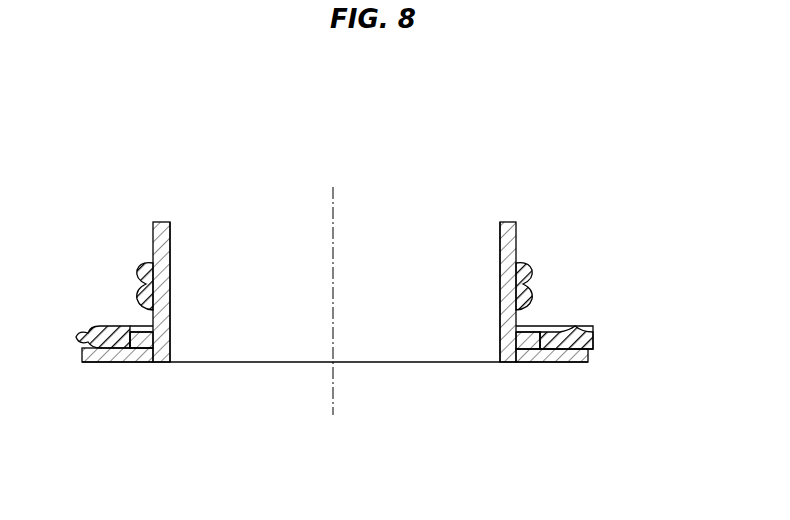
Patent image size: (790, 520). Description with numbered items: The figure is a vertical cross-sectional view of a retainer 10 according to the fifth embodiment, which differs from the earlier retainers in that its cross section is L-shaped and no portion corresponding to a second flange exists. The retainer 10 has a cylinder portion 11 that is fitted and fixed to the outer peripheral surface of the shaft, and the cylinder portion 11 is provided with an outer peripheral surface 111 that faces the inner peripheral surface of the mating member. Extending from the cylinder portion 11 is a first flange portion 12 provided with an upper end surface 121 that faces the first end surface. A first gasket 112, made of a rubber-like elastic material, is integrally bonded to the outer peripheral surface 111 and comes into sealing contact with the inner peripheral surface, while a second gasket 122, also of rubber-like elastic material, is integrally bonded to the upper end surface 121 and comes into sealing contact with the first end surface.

The retainer 10 is at (448, 157).
The cylinder portion 11 is at (501, 308).
The outer peripheral surface 111 is at (513, 334).
The first gasket 112 is at (534, 272).
The first flange portion 12 is at (558, 362).
The upper end surface 121 is at (540, 333).
The second gasket 122 is at (578, 325).